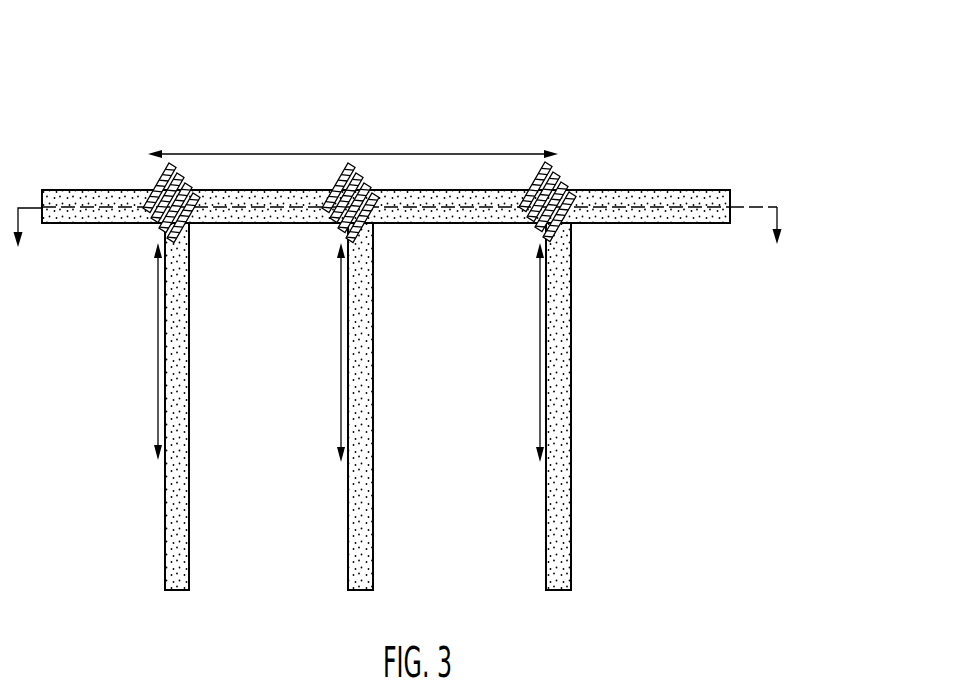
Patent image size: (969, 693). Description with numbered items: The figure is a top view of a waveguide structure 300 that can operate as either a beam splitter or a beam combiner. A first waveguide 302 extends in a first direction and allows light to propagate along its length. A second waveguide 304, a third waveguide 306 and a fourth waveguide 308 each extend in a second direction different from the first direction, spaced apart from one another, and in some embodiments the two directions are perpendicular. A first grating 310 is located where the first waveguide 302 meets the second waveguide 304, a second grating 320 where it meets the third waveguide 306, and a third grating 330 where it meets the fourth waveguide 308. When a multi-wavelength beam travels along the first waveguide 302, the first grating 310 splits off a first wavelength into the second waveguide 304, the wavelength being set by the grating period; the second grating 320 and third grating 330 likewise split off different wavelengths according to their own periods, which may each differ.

The waveguide structure 300 is at (792, 74).
The first waveguide 302 is at (667, 225).
The second waveguide 304 is at (566, 398).
The third waveguide 306 is at (369, 404).
The fourth waveguide 308 is at (186, 408).
The first grating 310 is at (563, 236).
The second grating 320 is at (367, 240).
The third grating 330 is at (186, 243).